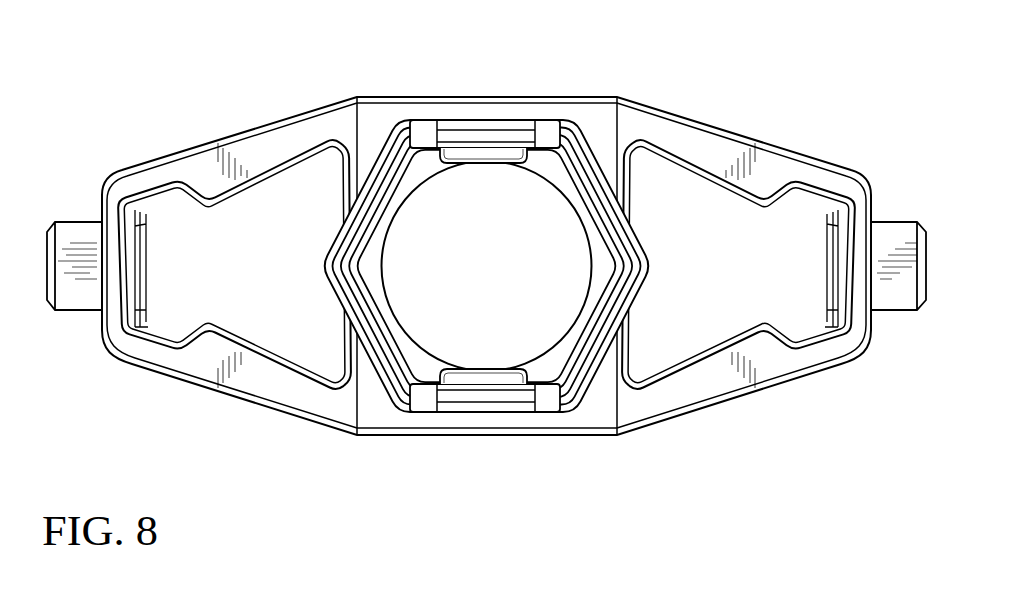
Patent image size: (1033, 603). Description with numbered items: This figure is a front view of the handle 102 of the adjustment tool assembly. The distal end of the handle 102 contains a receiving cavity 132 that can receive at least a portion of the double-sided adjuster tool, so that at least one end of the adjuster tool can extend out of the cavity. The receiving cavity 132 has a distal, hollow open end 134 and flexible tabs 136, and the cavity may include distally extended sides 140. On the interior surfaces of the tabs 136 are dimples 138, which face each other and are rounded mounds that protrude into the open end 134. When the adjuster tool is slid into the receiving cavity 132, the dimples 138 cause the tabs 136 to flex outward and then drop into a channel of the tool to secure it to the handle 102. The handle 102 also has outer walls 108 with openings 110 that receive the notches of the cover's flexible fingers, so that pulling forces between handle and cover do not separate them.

The handle 102 is at (247, 86).
The outer wall 108 is at (80, 225).
The opening 110 is at (148, 327).
The receiving cavity 132 is at (437, 215).
The open end 134 is at (587, 403).
The flexible tabs 136 is at (525, 132).
The dimples 138 is at (487, 153).
The distally extended sides 140 is at (588, 152).